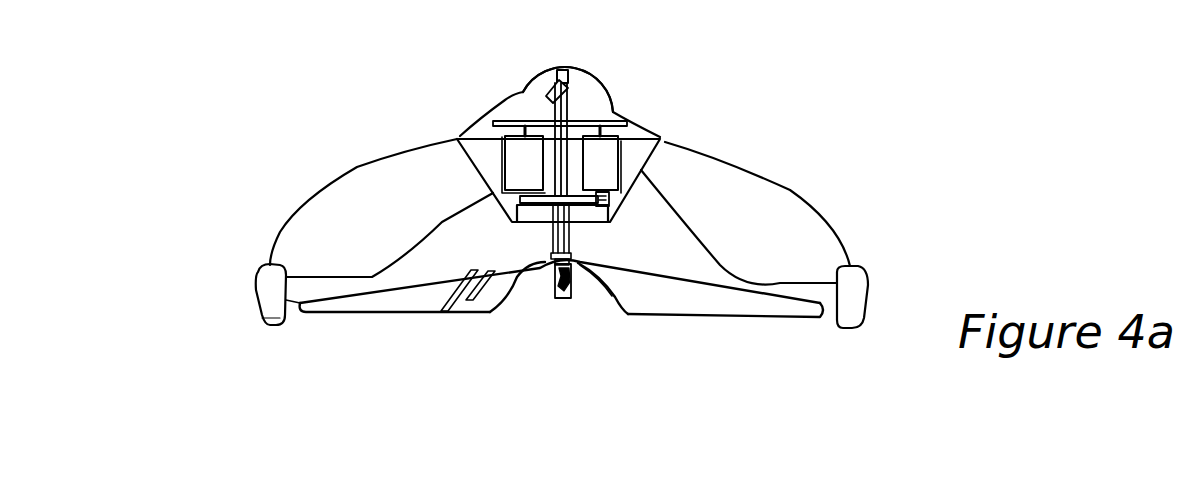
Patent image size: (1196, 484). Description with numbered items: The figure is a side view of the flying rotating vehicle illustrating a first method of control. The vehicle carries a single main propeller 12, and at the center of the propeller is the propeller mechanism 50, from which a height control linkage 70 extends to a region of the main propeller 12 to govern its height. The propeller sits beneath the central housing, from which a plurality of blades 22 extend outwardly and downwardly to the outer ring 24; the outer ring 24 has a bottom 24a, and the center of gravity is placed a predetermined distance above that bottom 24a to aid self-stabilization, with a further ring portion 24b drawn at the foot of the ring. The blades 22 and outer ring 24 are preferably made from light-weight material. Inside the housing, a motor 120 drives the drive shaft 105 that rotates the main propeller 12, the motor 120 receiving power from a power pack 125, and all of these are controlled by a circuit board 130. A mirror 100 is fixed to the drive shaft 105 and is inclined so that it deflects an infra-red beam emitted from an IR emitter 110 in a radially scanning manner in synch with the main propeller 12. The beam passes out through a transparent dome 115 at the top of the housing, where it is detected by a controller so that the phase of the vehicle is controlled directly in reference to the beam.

The main propeller 12 is at (392, 310).
The blades 22 is at (675, 152).
The outer ring 24 is at (252, 303).
The bottom of the outer ring 24a is at (298, 308).
The pad foot 24b is at (273, 327).
The propeller mechanism 50 is at (573, 296).
The height control linkage 70 is at (600, 280).
The mirror 100 is at (548, 98).
The drive shaft 105 is at (550, 235).
The IR emitter 110 is at (560, 70).
The transparent dome 115 is at (597, 73).
The motor 120 is at (605, 187).
The power pack 125 is at (520, 153).
The circuit board 130 is at (620, 121).